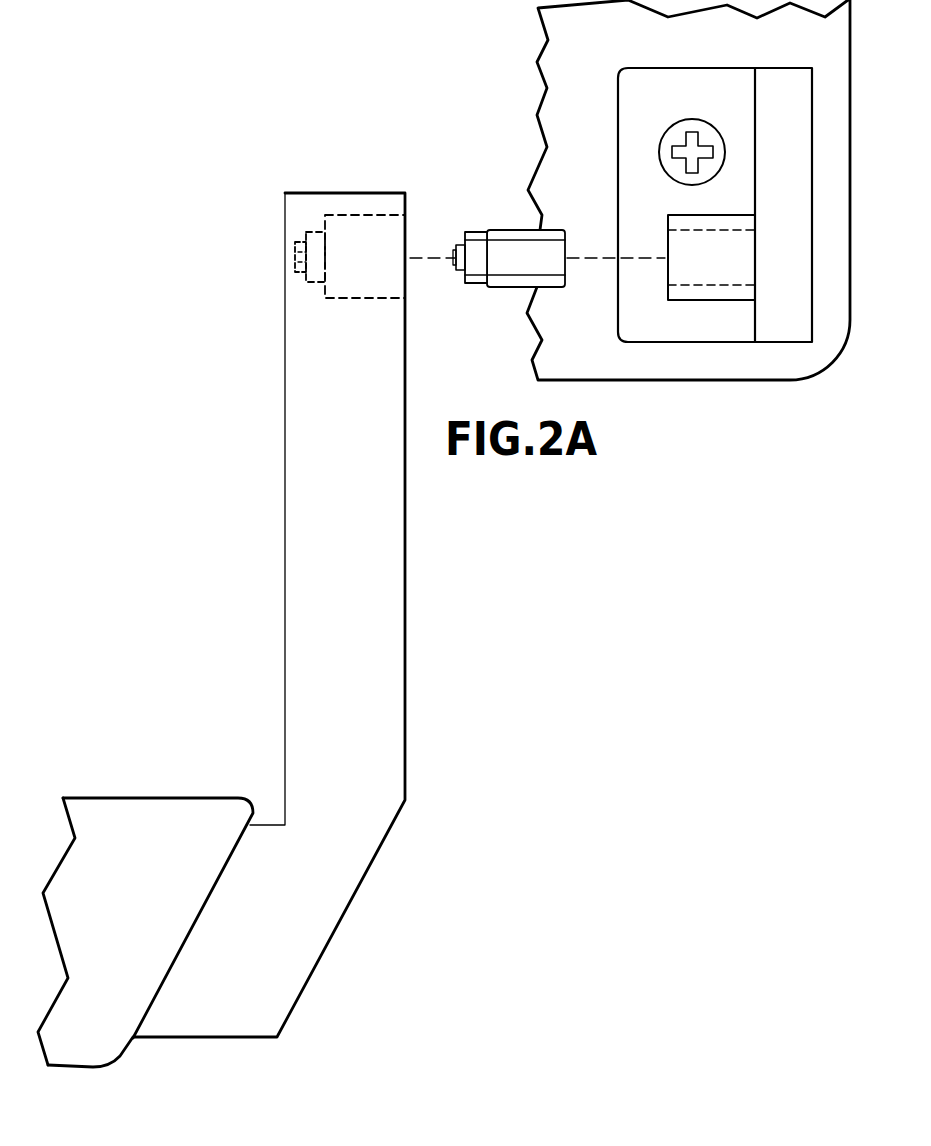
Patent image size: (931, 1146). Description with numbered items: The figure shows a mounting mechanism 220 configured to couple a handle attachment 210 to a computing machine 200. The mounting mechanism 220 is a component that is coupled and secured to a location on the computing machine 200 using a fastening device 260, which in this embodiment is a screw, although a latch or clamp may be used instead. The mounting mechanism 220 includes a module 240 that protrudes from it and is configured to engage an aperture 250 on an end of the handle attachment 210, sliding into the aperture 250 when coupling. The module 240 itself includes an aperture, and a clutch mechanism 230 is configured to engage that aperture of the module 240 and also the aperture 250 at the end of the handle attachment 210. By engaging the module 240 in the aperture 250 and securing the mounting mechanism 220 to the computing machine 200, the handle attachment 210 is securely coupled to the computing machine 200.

The computing machine 200 is at (778, 370).
The handle attachment 210 is at (407, 558).
The mounting mechanism 220 is at (692, 330).
The clutch mechanism 230 is at (503, 228).
The module 240 is at (713, 215).
The aperture 250 is at (367, 215).
The fastening device 260 is at (727, 143).